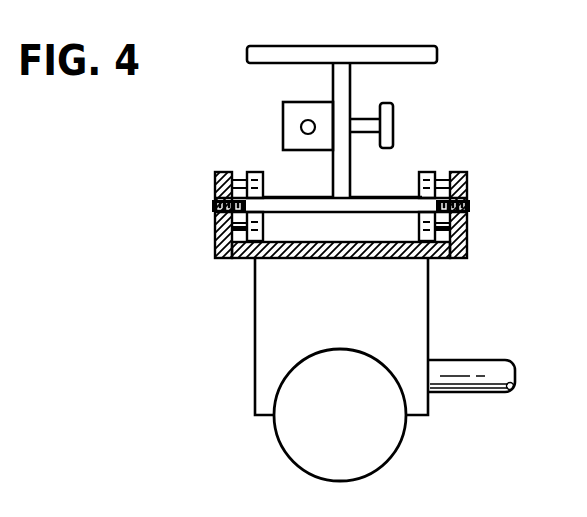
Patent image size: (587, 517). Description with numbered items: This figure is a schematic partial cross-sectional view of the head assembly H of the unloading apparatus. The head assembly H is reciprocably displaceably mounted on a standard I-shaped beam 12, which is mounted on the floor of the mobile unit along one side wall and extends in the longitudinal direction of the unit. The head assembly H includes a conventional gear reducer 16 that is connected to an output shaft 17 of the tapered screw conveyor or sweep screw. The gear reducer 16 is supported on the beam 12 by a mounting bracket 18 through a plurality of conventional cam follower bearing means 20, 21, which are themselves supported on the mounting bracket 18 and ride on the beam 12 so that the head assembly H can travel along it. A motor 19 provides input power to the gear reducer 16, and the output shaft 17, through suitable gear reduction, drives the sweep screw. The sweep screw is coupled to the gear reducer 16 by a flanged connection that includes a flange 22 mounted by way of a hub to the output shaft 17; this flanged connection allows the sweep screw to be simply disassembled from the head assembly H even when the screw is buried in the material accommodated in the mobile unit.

The head assembly H is at (385, 47).
The I-shaped beam 12 is at (352, 89).
The gear reducer 16 is at (425, 302).
The output shaft 17 is at (497, 360).
The mounting bracket 18 is at (468, 248).
The motor 19 is at (398, 453).
The cam follower bearing means 20 is at (247, 169).
The cam follower bearing means 21 is at (216, 232).
The flange 22 is at (431, 171).